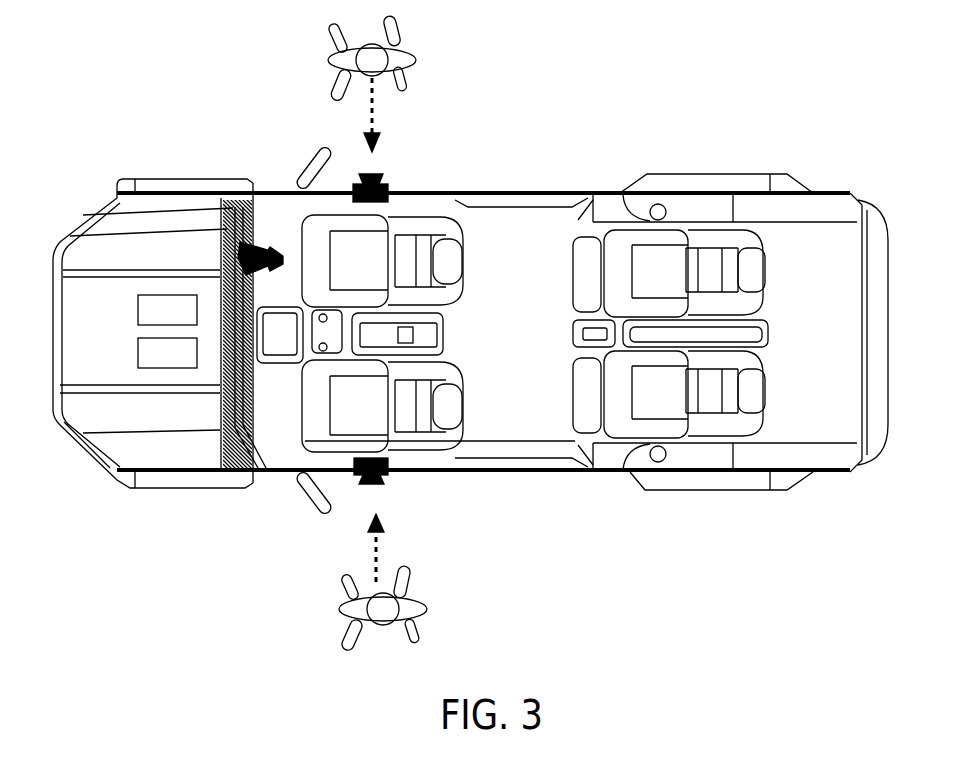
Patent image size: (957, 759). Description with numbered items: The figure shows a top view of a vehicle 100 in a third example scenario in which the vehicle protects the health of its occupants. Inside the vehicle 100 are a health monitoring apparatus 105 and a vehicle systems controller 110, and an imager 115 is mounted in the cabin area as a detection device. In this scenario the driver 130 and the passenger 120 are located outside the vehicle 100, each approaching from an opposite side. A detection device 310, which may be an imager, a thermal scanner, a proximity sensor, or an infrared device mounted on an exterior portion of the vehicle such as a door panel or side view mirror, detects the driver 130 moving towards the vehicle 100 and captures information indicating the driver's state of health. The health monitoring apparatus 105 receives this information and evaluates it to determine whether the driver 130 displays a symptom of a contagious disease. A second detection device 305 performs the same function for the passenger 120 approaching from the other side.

The vehicle 100 is at (78, 130).
The health monitoring apparatus 105 is at (182, 319).
The vehicle systems controller 110 is at (182, 362).
The imager 115 is at (271, 270).
The passenger 120 is at (416, 43).
The driver 130 is at (430, 595).
The detection device 305 is at (386, 173).
The detection device 310 is at (390, 489).